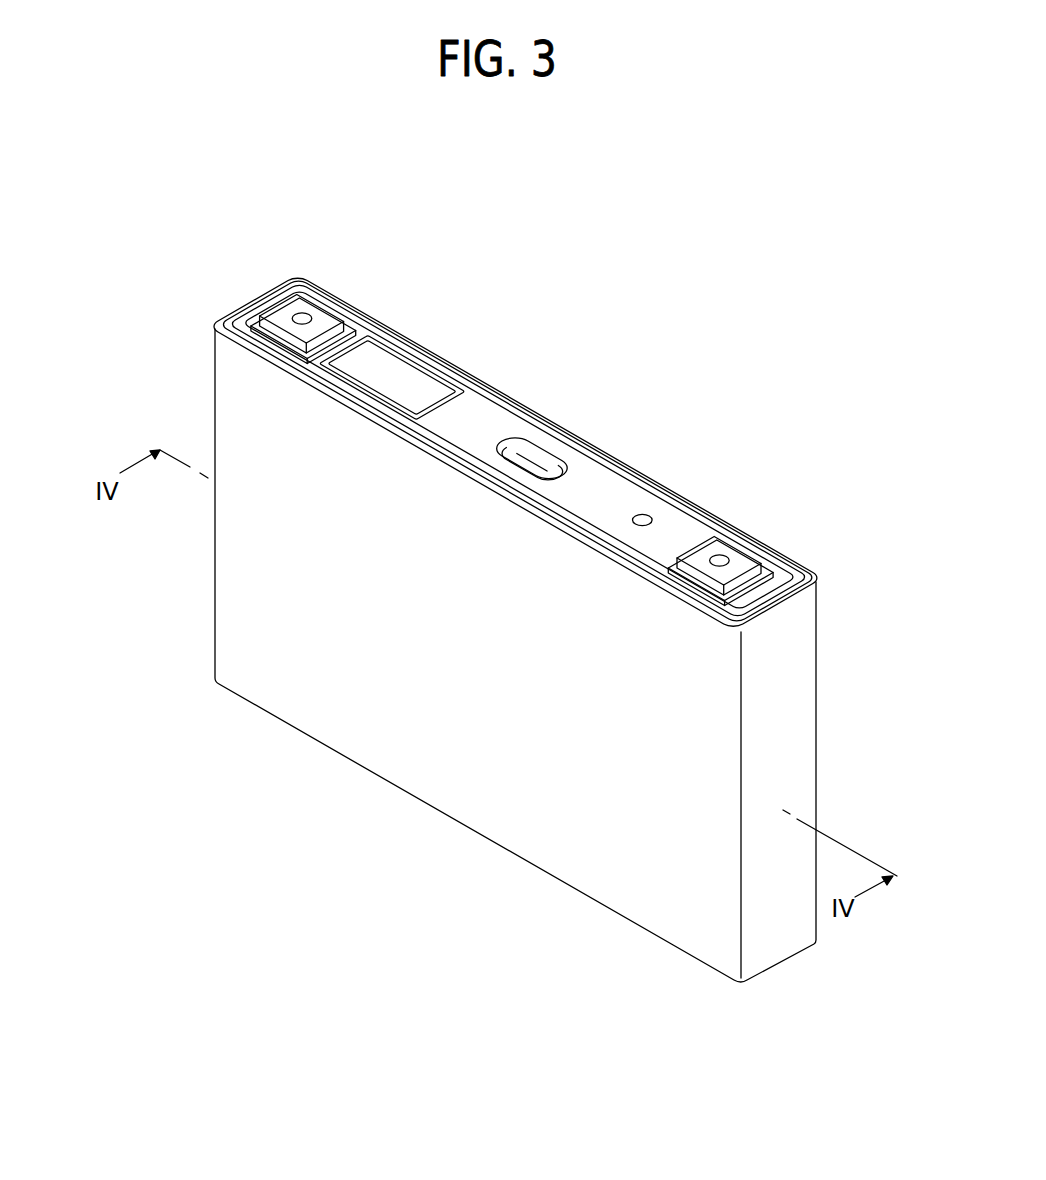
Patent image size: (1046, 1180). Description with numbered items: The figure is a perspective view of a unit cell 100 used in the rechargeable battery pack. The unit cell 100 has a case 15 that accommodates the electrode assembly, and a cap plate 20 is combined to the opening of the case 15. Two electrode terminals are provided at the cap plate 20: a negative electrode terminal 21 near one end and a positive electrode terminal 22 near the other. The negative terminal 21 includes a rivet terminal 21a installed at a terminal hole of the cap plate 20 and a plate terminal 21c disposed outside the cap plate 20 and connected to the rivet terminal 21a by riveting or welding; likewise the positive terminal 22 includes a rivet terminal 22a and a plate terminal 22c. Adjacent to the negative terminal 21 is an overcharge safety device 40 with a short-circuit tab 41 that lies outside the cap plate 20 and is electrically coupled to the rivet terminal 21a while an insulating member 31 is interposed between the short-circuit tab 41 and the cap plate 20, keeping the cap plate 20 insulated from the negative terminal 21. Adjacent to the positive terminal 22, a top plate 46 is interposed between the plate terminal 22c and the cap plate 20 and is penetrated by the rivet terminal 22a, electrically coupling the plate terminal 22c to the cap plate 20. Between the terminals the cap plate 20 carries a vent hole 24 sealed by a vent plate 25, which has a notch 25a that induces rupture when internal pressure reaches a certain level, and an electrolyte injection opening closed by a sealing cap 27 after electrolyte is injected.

The unit cell 100 is at (578, 238).
The case 15 is at (435, 775).
The cap plate 20 is at (487, 418).
The negative electrode terminal 21 is at (312, 310).
The rivet terminal 21a is at (297, 311).
The plate terminal 21c is at (330, 318).
The positive electrode terminal 22 is at (722, 549).
The rivet terminal 22a is at (725, 556).
The plate terminal 22c is at (772, 583).
The vent hole 24 is at (536, 462).
The vent plate 25 is at (543, 470).
The notch 25a is at (550, 473).
The sealing cap 27 is at (645, 518).
The insulating member 31 is at (370, 338).
The overcharge safety device 40 is at (417, 349).
The short-circuit tab 41 is at (428, 390).
The top plate 46 is at (737, 590).